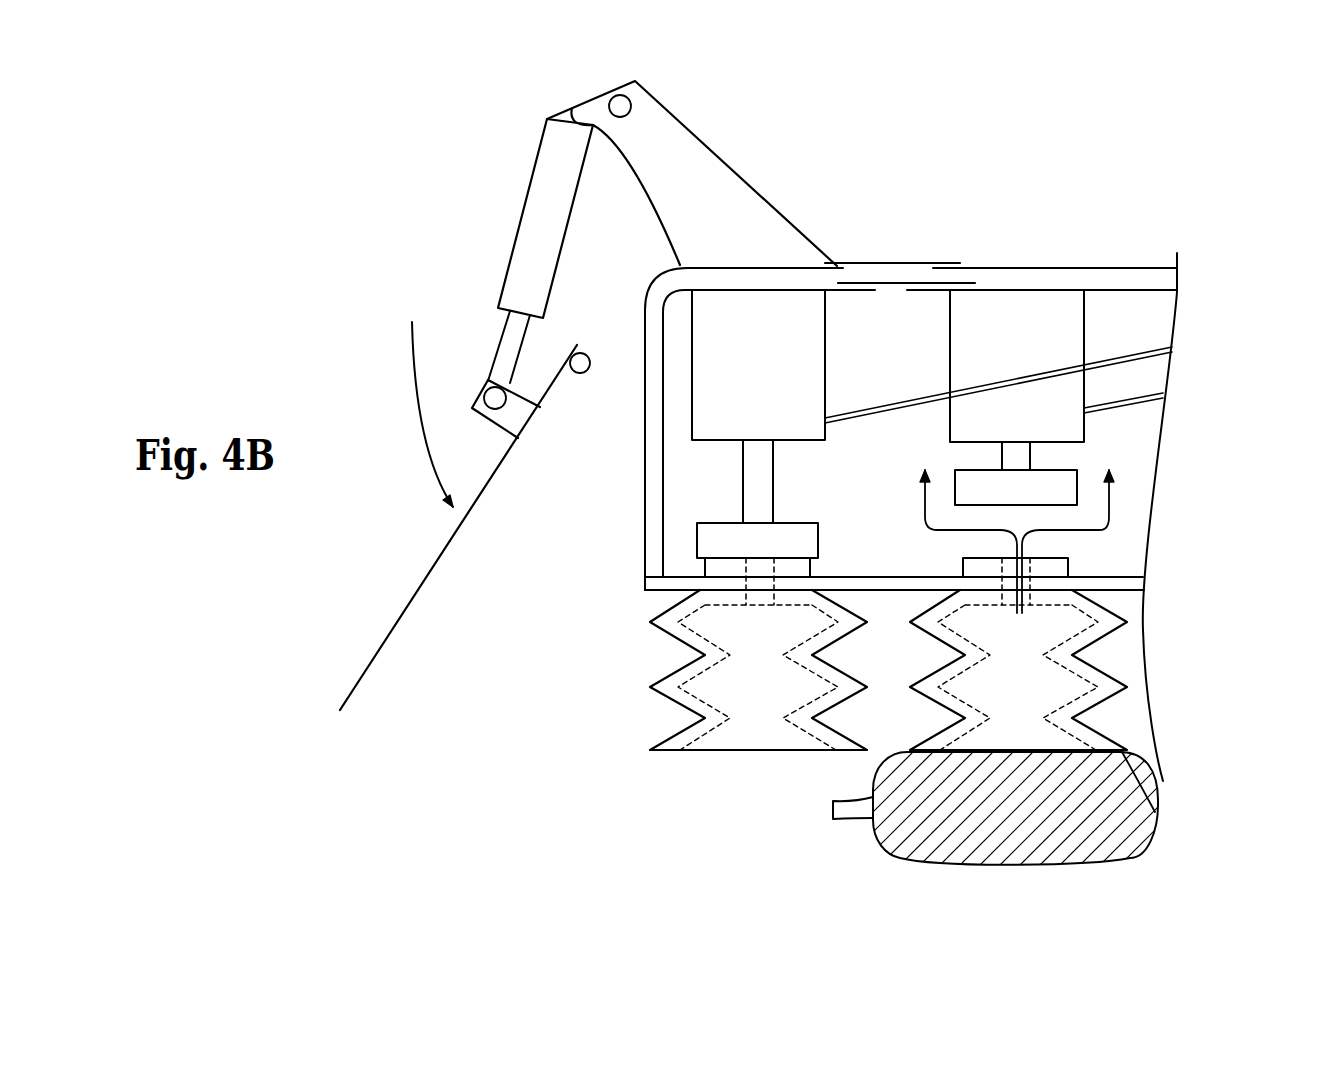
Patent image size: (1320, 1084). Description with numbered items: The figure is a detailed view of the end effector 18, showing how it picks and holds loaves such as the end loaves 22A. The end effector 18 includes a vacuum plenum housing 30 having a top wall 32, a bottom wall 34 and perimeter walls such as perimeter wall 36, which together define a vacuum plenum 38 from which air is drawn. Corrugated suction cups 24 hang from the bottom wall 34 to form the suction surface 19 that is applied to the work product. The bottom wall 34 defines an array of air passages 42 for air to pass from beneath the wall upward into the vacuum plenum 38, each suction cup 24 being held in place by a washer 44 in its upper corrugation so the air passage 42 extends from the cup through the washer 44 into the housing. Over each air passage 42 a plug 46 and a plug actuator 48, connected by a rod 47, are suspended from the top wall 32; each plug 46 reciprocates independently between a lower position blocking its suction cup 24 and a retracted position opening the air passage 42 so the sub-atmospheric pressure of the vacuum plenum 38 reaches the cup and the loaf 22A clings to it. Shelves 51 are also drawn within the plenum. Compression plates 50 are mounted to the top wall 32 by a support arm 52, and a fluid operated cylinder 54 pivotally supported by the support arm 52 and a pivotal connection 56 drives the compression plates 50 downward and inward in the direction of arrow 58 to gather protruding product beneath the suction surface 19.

The end effector 18 is at (992, 218).
The suction surface 19 is at (780, 787).
The end loaves 22A is at (1155, 812).
The suction cups 24 is at (680, 630).
The vacuum plenum housing 30 is at (905, 258).
The top wall 32 is at (1028, 266).
The bottom wall 34 is at (888, 577).
The perimeter wall 36 is at (652, 397).
The vacuum plenum 38 is at (863, 380).
The air passage 42 is at (762, 597).
The washer 44 is at (707, 566).
The plug 46 is at (718, 547).
The rod 47 is at (752, 482).
The plug actuator 48 is at (738, 356).
The compression plates 50 is at (430, 573).
The shelves 51 is at (1143, 398).
The support arm 52 is at (703, 168).
The fluid operated cylinder 54 is at (517, 233).
The pivotal connection 56 is at (477, 397).
The arrow 58 is at (423, 440).